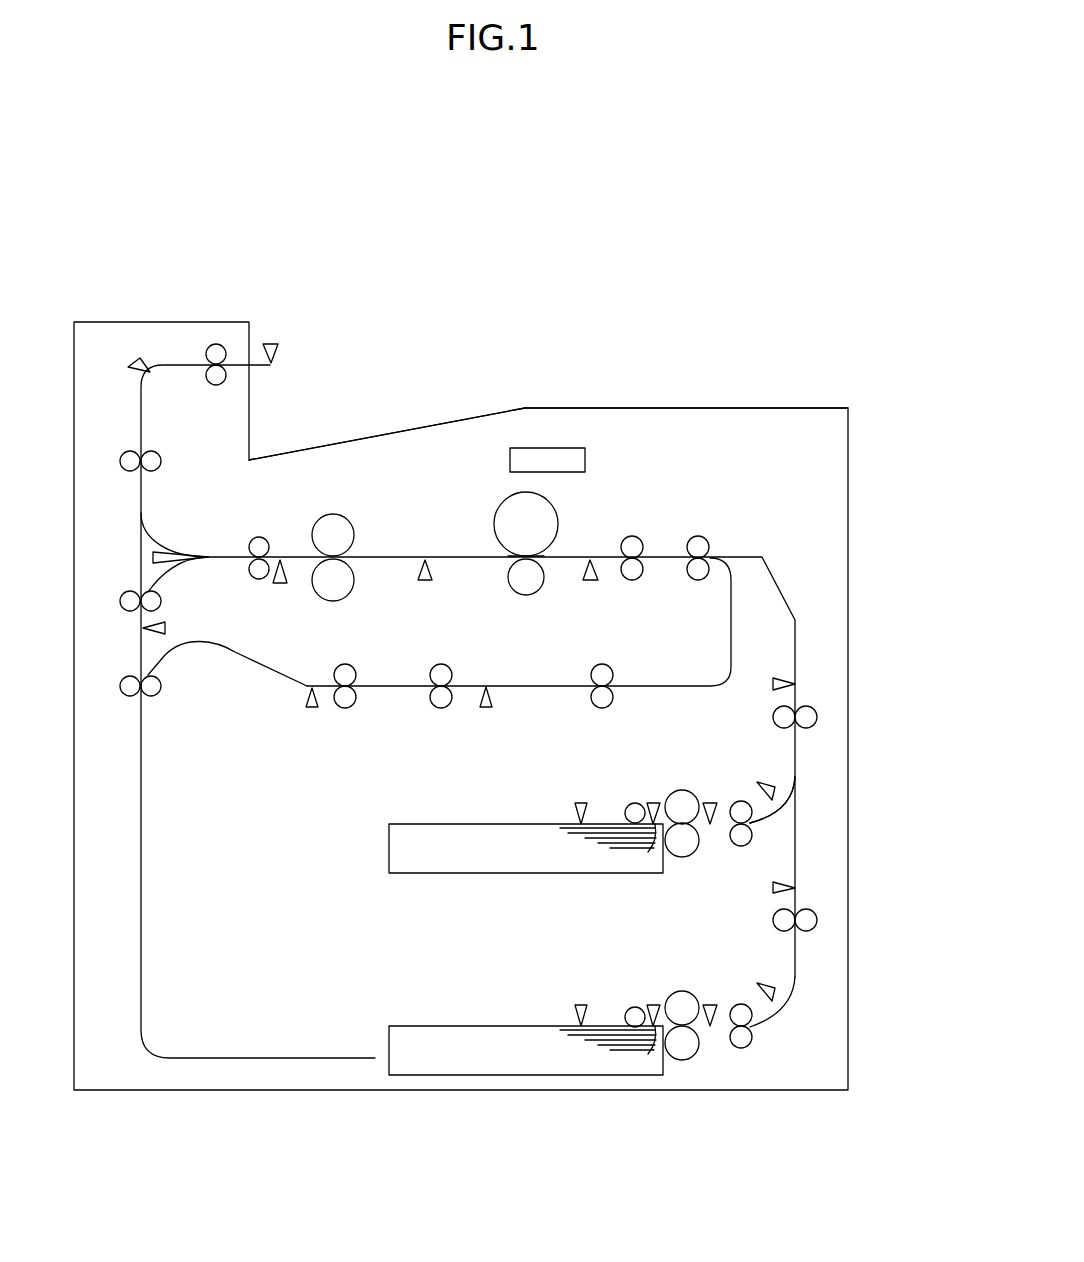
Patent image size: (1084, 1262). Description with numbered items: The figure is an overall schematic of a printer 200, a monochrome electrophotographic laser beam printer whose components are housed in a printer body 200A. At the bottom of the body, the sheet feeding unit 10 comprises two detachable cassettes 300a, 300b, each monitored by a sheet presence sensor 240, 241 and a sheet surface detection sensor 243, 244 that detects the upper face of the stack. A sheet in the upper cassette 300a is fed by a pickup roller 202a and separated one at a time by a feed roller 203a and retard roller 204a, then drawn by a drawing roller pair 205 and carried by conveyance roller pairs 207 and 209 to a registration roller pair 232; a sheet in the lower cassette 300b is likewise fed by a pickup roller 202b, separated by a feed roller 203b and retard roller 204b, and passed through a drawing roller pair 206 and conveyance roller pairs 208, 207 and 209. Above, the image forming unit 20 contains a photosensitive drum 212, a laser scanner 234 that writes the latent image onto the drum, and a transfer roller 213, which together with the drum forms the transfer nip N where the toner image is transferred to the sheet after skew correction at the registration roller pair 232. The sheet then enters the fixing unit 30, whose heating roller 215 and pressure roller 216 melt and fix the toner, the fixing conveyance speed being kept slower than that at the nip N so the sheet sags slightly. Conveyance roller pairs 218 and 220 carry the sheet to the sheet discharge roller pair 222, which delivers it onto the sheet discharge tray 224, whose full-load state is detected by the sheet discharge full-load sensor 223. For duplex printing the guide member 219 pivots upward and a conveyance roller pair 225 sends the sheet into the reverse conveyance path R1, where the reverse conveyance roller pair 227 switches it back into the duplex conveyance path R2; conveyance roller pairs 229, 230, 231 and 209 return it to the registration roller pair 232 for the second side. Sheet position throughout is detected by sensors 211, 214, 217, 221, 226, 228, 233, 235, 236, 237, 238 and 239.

The printer 200 is at (544, 308).
The printer body 200A is at (720, 418).
The image forming unit 20 is at (535, 493).
The fixing unit 30 is at (341, 537).
The sheet feeding unit 10 is at (813, 830).
The transfer nip N is at (508, 560).
The photosensitive drum 212 is at (538, 527).
The transfer roller 213 is at (530, 582).
The heating roller 215 is at (340, 532).
The pressure roller 216 is at (338, 585).
The sensor 214 is at (427, 582).
The sensor 211 is at (593, 582).
The sensor 217 is at (280, 583).
The conveyance roller pair 218 is at (262, 547).
The guide member 219 is at (155, 557).
The conveyance roller pair 220 is at (153, 463).
The sensor 221 is at (130, 368).
The sheet discharge roller pair 222 is at (216, 378).
The sheet discharge full-load sensor 223 is at (275, 358).
The sheet discharge tray 224 is at (415, 429).
The conveyance roller pair 225 is at (130, 605).
The sensor 226 is at (166, 628).
The reverse conveyance roller pair 227 is at (153, 690).
The sensor 228 is at (312, 710).
The conveyance roller pair 229 is at (348, 700).
The conveyance roller pair 230 is at (444, 700).
The conveyance roller pair 231 is at (605, 675).
The registration roller pair 232 is at (635, 547).
The conveyance roller pair 209 is at (702, 547).
The conveyance roller pair 207 is at (784, 719).
The conveyance roller pair 208 is at (784, 922).
The sensor 233 is at (488, 707).
The laser scanner 234 is at (585, 460).
The sensor 235 is at (775, 790).
The sensor 236 is at (795, 684).
The sensor 237 is at (715, 1010).
The sensor 238 is at (775, 990).
The sensor 239 is at (795, 888).
The sheet presence sensor 240 is at (580, 810).
The sheet presence sensor 241 is at (580, 1010).
The sheet surface detection sensor 243 is at (655, 840).
The sheet surface detection sensor 244 is at (655, 1045).
The pickup roller 202a is at (635, 803).
The pickup roller 202b is at (635, 1007).
The feed roller 203a is at (682, 800).
The feed roller 203b is at (682, 1000).
The retard roller 204a is at (686, 845).
The retard roller 204b is at (688, 1048).
The drawing roller pair 205 is at (743, 840).
The drawing roller pair 206 is at (745, 1040).
The cassette 300a is at (389, 848).
The cassette 300b is at (389, 1050).
The reverse conveyance path R1 is at (141, 818).
The duplex conveyance path R2 is at (268, 670).